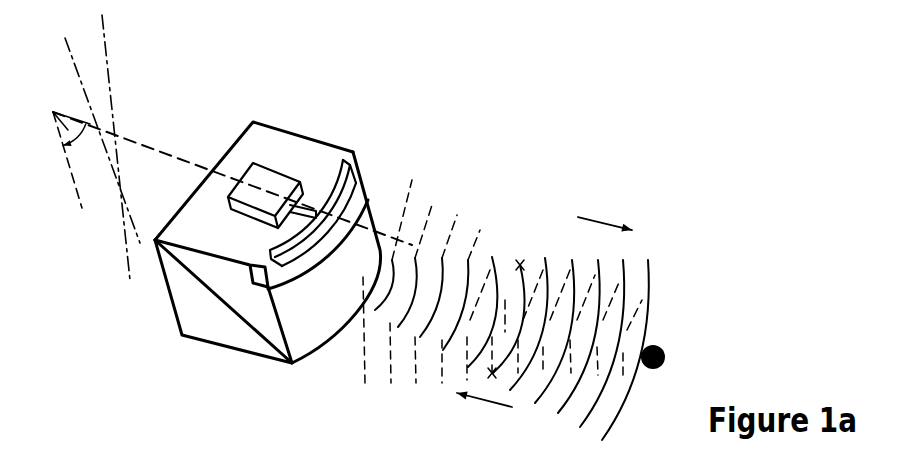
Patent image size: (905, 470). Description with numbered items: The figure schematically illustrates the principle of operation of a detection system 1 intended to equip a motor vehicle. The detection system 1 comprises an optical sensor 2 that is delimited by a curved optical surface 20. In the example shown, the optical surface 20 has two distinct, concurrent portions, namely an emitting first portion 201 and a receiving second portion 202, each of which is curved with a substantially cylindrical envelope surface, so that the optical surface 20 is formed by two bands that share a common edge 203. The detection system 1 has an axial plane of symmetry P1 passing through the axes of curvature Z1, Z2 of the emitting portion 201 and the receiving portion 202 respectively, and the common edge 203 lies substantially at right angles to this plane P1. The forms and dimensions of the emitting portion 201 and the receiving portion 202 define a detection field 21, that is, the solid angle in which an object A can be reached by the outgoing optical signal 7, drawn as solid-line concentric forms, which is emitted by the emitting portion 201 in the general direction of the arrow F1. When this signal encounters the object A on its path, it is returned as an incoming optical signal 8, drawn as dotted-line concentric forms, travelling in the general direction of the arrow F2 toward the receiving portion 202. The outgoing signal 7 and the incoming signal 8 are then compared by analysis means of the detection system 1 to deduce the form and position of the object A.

The detection system 1 is at (281, 212).
The optical sensor 2 is at (268, 249).
The optical surface 20 is at (518, 292).
The emitting portion 201 is at (359, 188).
The receiving portion 202 is at (308, 347).
The common edge 203 is at (300, 277).
The outgoing optical signal 7 is at (470, 258).
The detection field 21 is at (518, 300).
The incoming optical signal 8 is at (632, 326).
The object A is at (665, 352).
The axis of curvature of the emitting portion Z1 is at (78, 72).
The axis of curvature of the receiving portion Z2 is at (108, 43).
The axial plane of symmetry P1 is at (62, 129).
The arrow F1 is at (593, 217).
The arrow F2 is at (509, 406).